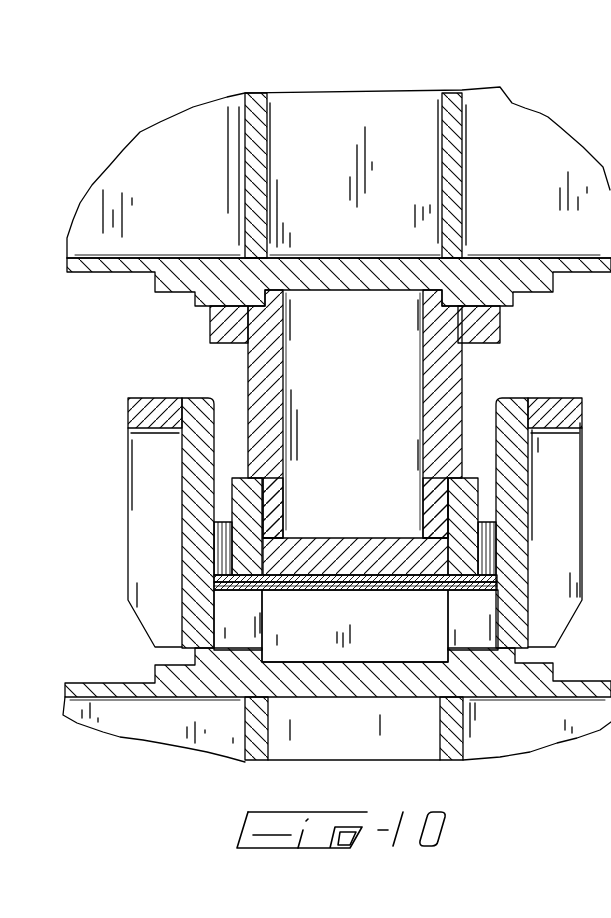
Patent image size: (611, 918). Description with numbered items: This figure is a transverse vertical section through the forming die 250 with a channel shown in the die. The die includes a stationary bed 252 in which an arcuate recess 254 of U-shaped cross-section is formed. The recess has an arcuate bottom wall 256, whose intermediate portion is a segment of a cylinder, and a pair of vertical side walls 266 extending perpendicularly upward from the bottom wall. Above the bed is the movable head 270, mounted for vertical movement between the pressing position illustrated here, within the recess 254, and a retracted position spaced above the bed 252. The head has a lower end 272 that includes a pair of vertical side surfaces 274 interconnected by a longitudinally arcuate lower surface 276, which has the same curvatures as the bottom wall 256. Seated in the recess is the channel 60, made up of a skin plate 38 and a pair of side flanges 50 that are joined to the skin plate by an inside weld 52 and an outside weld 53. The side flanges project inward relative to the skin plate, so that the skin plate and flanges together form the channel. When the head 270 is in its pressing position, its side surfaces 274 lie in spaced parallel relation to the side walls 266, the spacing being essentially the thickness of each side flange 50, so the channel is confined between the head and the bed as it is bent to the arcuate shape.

The forming die 250 is at (128, 128).
The movable head 270 is at (157, 292).
The vertical side walls 266 is at (222, 405).
The arcuate recess 254 is at (355, 414).
The lower end 272 is at (381, 538).
The vertical side surfaces 274 is at (232, 546).
The inside weld 52 is at (228, 550).
The side flanges 50 is at (216, 553).
The lower surface 276 is at (316, 576).
The bottom wall 256 is at (355, 602).
The skin plate 38 is at (355, 603).
The outside weld 53 is at (537, 612).
The arcuate channel 60 is at (295, 588).
The stationary bed 252 is at (142, 629).